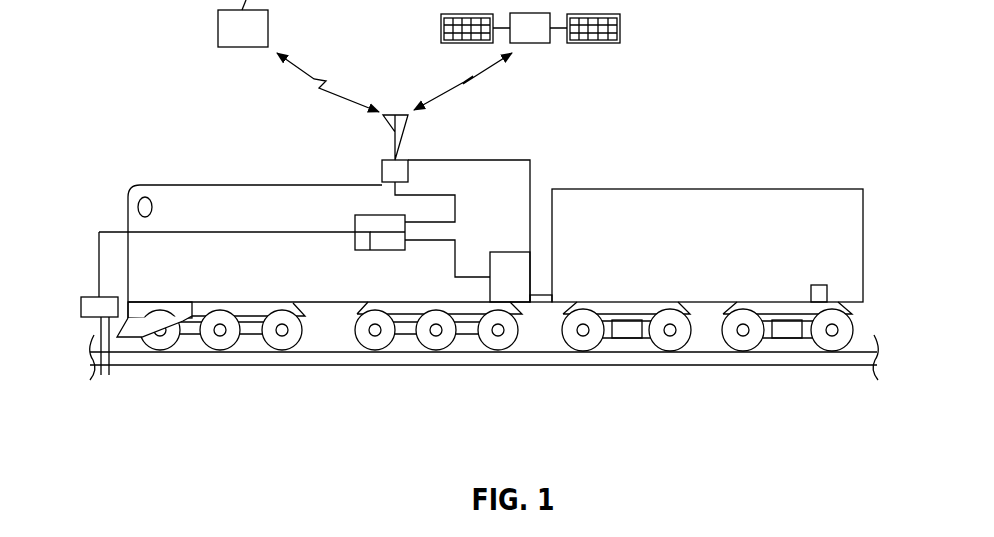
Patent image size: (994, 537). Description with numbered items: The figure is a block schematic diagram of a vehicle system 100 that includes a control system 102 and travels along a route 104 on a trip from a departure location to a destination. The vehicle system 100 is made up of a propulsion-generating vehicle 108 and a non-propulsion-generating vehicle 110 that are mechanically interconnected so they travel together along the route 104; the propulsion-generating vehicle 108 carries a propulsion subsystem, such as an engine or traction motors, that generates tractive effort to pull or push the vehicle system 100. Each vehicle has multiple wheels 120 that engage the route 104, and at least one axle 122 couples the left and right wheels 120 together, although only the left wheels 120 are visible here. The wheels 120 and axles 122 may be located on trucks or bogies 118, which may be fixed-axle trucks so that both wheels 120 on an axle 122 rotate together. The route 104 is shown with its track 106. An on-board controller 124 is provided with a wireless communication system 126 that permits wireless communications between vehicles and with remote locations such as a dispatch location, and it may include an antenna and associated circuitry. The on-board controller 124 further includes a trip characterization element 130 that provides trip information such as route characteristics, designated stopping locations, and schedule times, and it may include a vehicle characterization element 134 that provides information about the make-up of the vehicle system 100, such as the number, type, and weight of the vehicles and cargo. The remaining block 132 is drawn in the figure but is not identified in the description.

The vehicle system 100 is at (275, 140).
The control system 102 is at (560, 177).
The route 104 is at (136, 371).
The track rails 106 is at (247, 365).
The propulsion-generating vehicle 108 is at (242, 185).
The non-propulsion-generating vehicle 110 is at (738, 259).
The trucks or bogies 118 is at (464, 312).
The wheels 120 is at (363, 333).
The axle 122 is at (375, 330).
The on-board controller 124 is at (358, 216).
The wireless communication system 126 is at (382, 168).
The trip characterization element 130 is at (355, 239).
The propulsion system 132 is at (522, 290).
The vehicle characterization element 134 is at (378, 252).